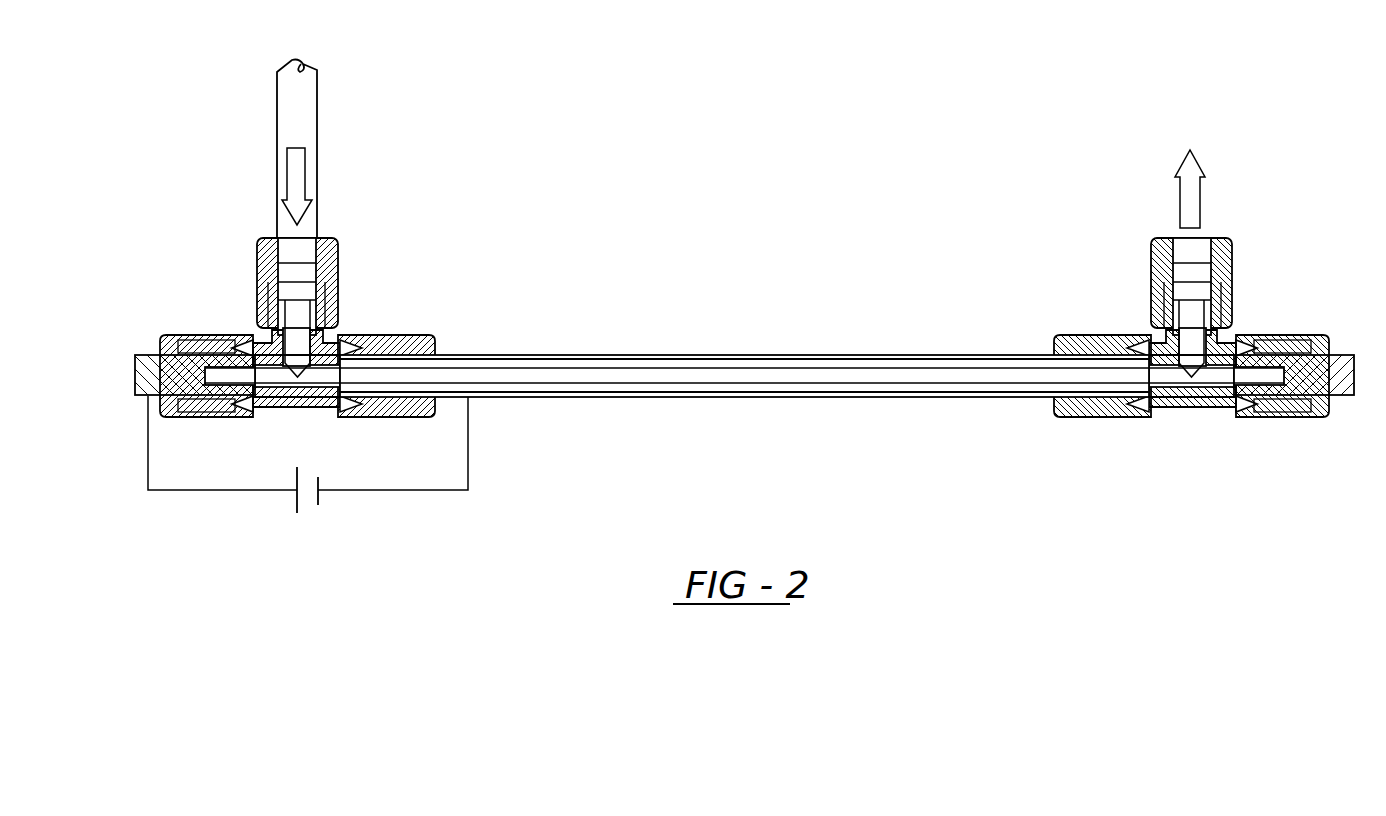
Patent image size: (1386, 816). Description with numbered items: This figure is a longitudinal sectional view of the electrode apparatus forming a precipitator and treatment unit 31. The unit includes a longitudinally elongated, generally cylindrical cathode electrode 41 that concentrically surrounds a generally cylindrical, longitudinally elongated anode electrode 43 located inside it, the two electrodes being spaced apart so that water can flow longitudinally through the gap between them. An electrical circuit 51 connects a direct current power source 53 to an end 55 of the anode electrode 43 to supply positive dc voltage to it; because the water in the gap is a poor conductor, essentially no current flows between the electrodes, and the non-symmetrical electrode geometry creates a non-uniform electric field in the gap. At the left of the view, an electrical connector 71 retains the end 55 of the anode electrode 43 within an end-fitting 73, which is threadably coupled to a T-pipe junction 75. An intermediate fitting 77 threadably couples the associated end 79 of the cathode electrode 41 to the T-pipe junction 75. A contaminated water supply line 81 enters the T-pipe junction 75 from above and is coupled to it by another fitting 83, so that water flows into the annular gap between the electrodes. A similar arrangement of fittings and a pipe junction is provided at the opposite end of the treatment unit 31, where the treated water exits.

The precipitator and treatment unit 31 is at (734, 309).
The cathode electrode 41 is at (716, 355).
The anode electrode 43 is at (527, 373).
The electrical circuit 51 is at (148, 450).
The direct current power source 53 is at (232, 535).
The end of anode 55 is at (212, 337).
The electrical connector 71 is at (136, 375).
The end-fitting 73 is at (178, 337).
The T-pipe junction 75 is at (297, 405).
The intermediate fitting 77 is at (418, 337).
The end of cathode 79 is at (340, 348).
The contaminated water supply line 81 is at (277, 222).
The fitting 83 is at (328, 240).